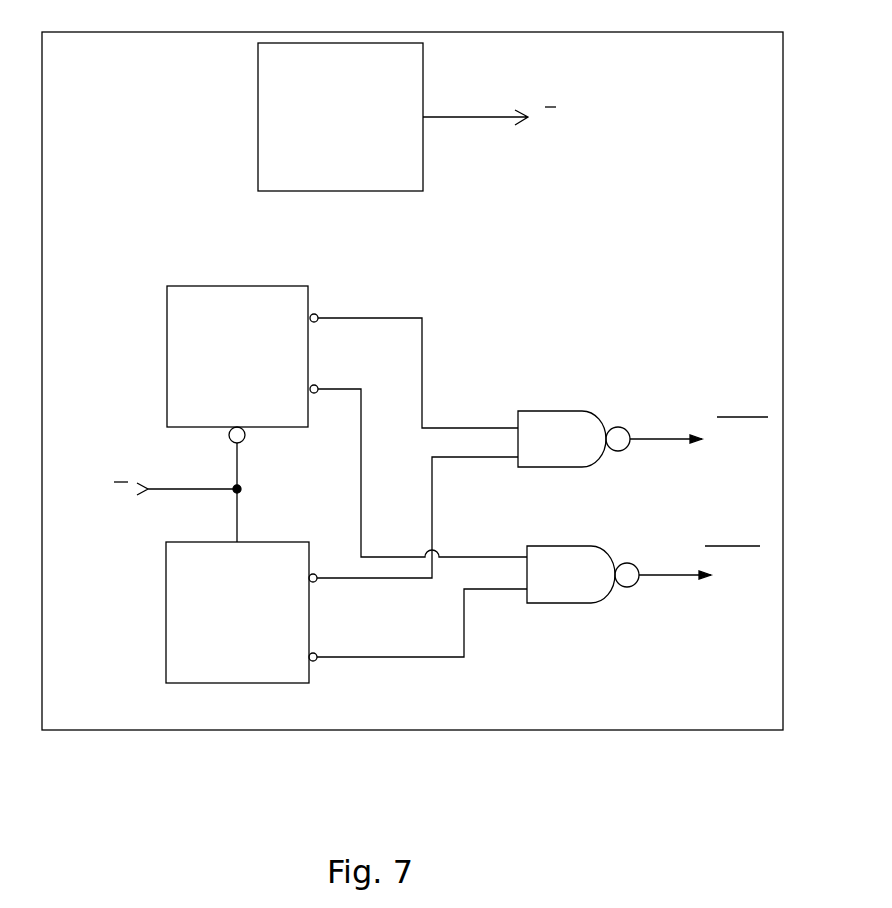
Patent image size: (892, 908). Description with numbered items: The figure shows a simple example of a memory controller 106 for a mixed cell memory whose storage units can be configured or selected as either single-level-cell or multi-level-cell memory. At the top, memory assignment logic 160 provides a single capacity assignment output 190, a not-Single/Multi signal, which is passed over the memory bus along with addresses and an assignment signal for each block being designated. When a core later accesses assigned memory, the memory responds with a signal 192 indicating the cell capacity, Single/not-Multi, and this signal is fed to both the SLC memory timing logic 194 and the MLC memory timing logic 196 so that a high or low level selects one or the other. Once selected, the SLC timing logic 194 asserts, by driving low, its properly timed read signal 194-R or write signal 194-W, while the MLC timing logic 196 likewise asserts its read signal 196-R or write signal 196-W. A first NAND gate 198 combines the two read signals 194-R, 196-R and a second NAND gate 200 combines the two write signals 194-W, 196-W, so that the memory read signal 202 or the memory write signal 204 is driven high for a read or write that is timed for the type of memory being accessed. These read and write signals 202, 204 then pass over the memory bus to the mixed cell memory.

The memory controller 106 is at (583, 730).
The memory assignment logic 160 is at (258, 110).
The capacity assignment output 190 is at (498, 127).
The cell capacity signal 192 is at (167, 492).
The SLC memory timing logic 194 is at (166, 585).
The SLC read signal 194-R is at (413, 519).
The SLC write signal 194-W is at (418, 625).
The MLC memory timing logic 196 is at (167, 335).
The MLC read signal 196-R is at (414, 362).
The MLC write signal 196-W is at (418, 463).
The NAND gate 198 is at (535, 411).
The NAND gate 200 is at (553, 546).
The memory read signal 202 is at (699, 428).
The memory write signal 204 is at (699, 562).